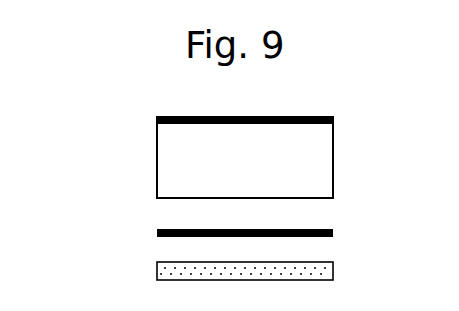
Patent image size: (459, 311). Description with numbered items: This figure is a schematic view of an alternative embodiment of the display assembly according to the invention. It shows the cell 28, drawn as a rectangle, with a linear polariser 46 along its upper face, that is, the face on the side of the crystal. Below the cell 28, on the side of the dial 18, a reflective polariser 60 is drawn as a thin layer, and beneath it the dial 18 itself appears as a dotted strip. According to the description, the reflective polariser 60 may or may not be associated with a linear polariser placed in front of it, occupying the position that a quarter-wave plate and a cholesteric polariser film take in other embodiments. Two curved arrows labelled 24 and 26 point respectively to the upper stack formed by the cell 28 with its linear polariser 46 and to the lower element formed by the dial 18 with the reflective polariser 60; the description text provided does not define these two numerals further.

The first substrate assembly 24 is at (122, 161).
The second substrate assembly 26 is at (112, 270).
The cell 28 is at (315, 167).
The linear polariser 46 is at (333, 121).
The reflective polariser 60 is at (333, 233).
The dial 18 is at (333, 273).